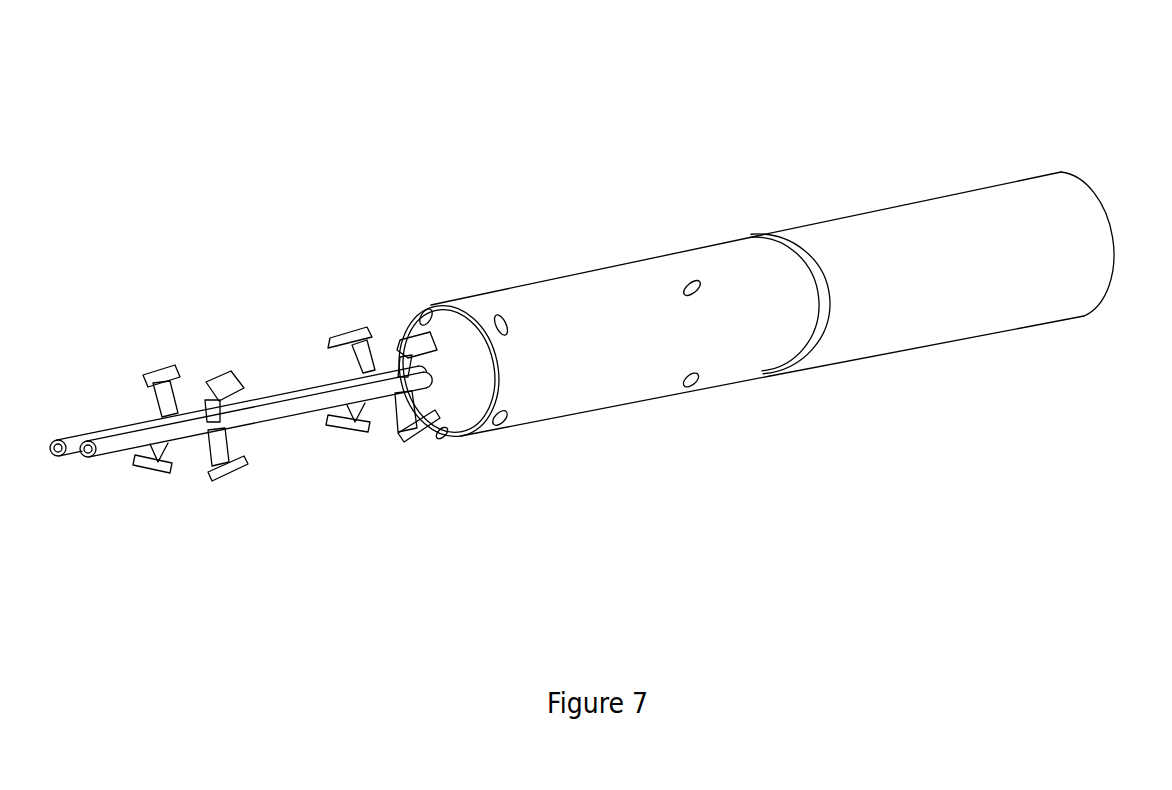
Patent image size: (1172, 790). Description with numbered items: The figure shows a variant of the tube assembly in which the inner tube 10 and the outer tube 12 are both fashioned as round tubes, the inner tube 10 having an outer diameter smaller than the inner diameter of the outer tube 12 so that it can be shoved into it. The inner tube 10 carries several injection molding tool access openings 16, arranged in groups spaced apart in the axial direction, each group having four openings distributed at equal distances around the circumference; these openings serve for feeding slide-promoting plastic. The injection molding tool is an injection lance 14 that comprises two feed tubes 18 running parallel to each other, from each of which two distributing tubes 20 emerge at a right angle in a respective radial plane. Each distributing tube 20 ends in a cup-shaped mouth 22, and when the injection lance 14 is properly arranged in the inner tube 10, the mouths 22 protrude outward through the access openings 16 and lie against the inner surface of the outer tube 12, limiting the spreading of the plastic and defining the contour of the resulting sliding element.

The inner tube 10 is at (608, 303).
The outer tube 12 is at (928, 228).
The injection lance 14 is at (252, 375).
The injection molding tool access openings 16 is at (424, 310).
The feed tubes 18 is at (327, 386).
The distributing tubes 20 is at (408, 372).
The cup-shaped mouth 22 is at (400, 335).